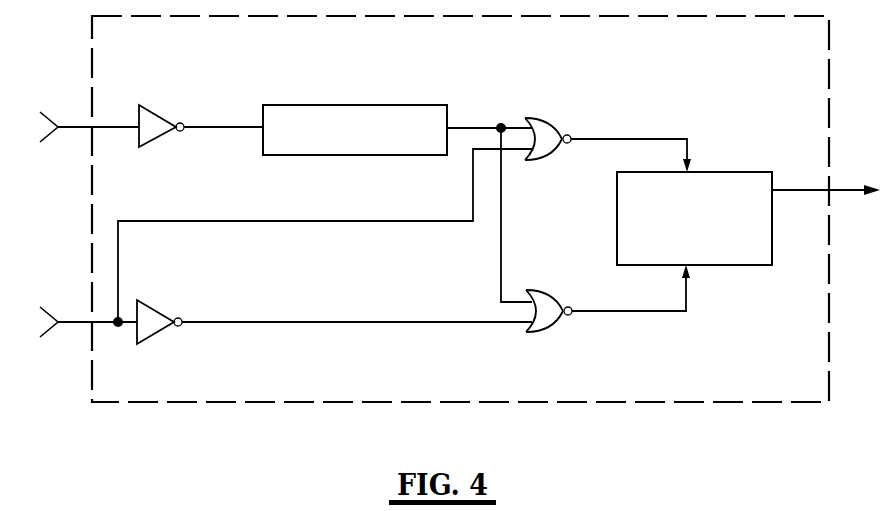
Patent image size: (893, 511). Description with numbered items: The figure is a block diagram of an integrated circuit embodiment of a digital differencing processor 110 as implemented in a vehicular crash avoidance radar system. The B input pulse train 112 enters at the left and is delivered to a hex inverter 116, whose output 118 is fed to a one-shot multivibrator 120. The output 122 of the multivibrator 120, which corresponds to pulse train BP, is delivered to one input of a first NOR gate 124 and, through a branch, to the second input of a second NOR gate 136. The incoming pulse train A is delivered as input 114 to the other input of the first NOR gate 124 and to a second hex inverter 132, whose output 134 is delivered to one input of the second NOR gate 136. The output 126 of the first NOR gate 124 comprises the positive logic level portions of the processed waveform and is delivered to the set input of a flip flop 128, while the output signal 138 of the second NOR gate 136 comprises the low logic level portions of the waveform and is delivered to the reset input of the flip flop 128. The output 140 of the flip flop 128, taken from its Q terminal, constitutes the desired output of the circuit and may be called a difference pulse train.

The digital differencing processor 110 is at (130, 414).
The B input pulse train 112 is at (77, 128).
The input of pulse train A 114 is at (80, 320).
The hex inverter 116 is at (158, 140).
The output of hex inverter 118 is at (227, 127).
The one-shot multivibrator 120 is at (362, 105).
The output of multivibrator 122 is at (462, 128).
The first NOR gate 124 is at (548, 122).
The output of first NOR gate 126 is at (603, 139).
The flip flop 128 is at (728, 172).
The second hex inverter 132 is at (158, 305).
The output of second hex inverter 134 is at (367, 322).
The second NOR gate 136 is at (545, 292).
The output signal of second NOR gate 138 is at (655, 312).
The output of flip flop 140 is at (800, 190).